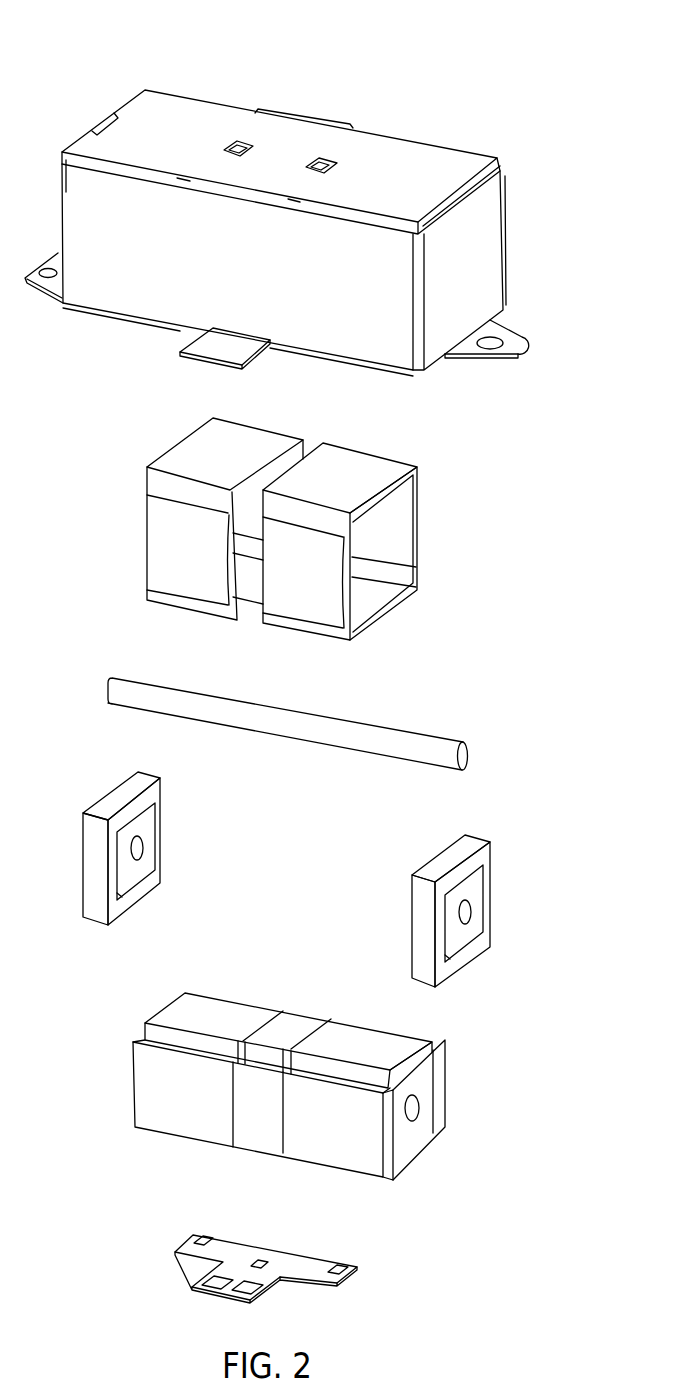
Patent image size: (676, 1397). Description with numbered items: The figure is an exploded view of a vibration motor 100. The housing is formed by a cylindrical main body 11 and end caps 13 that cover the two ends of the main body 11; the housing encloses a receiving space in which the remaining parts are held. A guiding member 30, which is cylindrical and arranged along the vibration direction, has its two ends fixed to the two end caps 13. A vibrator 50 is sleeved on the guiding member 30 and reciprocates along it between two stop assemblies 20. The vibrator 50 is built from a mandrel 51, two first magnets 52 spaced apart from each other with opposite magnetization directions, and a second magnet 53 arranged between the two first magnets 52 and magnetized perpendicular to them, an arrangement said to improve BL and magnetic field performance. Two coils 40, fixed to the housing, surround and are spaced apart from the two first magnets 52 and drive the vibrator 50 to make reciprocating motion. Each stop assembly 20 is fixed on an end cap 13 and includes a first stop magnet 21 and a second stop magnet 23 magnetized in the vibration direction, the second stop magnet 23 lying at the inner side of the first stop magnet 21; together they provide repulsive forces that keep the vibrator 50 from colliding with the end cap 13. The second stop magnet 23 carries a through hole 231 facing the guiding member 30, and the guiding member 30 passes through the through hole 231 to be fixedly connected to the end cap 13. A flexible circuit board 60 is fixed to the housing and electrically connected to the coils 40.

The vibration motor 100 is at (303, 35).
The main body 11 is at (442, 160).
The end cap 13 is at (475, 243).
The stop assembly 20 is at (506, 911).
The first stop magnet 21 is at (483, 855).
The second stop magnet 23 is at (473, 892).
The through hole 231 is at (470, 917).
The guiding member 30 is at (423, 745).
The coil 40 is at (367, 473).
The vibrator 50 is at (337, 1085).
The mandrel 51 is at (440, 1110).
The first magnet 52 is at (405, 1045).
The second magnet 53 is at (303, 1025).
The flexible circuit board 60 is at (323, 1262).